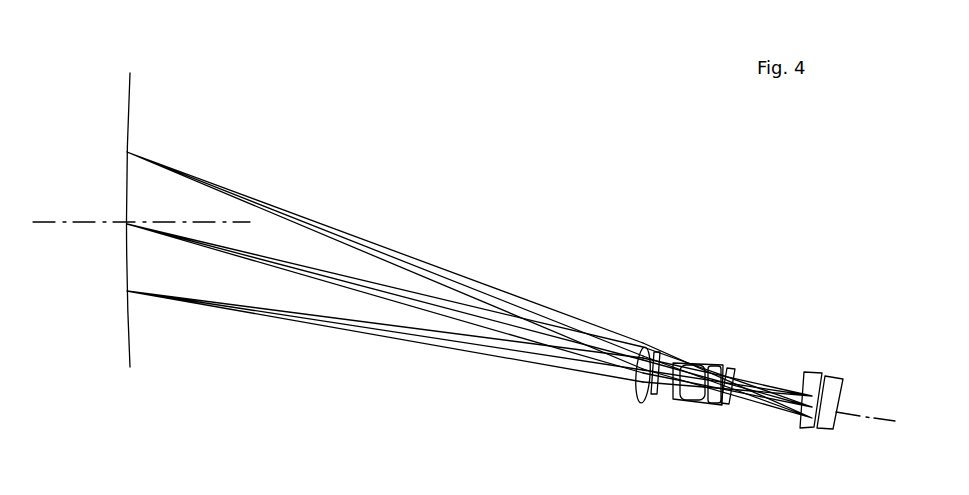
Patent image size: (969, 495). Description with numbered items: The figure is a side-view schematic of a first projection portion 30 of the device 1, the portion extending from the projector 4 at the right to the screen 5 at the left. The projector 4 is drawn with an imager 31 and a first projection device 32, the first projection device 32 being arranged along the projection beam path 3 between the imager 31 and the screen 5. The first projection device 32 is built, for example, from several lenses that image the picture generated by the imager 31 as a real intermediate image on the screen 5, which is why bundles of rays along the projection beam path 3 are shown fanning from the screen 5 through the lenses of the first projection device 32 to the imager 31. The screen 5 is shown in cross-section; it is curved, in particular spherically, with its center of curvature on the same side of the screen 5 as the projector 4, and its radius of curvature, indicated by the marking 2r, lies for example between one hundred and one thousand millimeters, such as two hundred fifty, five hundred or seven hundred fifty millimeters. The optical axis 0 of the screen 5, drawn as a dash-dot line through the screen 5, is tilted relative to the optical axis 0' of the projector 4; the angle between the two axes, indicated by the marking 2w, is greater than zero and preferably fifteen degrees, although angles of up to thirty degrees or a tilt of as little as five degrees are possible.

The device 1 is at (514, 131).
The first projection portion 30 is at (626, 46).
The projection beam path 3 is at (392, 373).
The projector 4 is at (696, 247).
The screen 5 is at (133, 94).
The optical axis of the screen 0 is at (464, 251).
The optical axis of the projector 0' is at (79, 142).
The angle between the optical axes 2w is at (90, 282).
The radius of curvature of the screen 2r is at (187, 366).
The imager 31 is at (840, 384).
The first projection device 32 is at (665, 423).